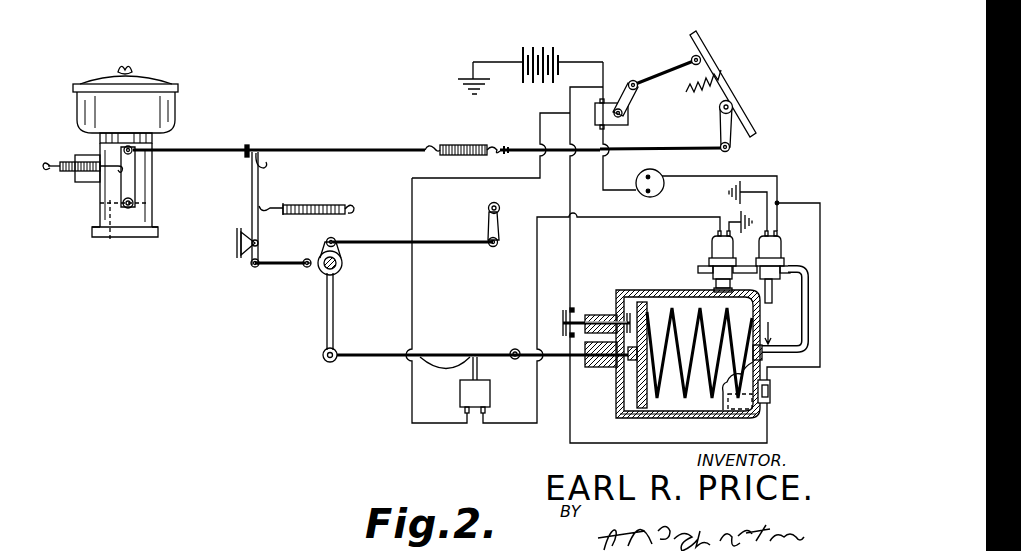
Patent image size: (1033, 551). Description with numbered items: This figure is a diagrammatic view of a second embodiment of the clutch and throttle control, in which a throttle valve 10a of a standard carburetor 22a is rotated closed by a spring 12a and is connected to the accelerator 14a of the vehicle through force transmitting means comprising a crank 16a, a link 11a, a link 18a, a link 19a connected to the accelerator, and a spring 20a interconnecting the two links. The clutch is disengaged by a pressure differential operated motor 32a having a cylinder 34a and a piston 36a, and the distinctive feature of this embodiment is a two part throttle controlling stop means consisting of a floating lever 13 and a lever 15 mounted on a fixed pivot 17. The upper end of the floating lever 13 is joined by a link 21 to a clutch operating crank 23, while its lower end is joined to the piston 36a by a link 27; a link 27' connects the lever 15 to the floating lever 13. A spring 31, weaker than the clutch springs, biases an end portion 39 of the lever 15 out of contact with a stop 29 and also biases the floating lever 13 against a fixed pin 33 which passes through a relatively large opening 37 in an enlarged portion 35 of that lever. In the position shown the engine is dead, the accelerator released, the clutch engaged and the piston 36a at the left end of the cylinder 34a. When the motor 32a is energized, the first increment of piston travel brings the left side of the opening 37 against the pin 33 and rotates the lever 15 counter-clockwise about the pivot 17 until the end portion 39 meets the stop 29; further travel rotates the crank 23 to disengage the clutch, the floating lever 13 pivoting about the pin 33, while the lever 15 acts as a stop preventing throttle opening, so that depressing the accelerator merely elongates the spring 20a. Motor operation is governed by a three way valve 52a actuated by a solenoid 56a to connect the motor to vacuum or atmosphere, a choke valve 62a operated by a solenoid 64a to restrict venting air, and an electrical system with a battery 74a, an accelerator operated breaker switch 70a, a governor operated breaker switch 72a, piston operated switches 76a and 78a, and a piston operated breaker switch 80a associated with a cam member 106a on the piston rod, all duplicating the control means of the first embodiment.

The throttle valve 10a is at (107, 240).
The link 11a is at (195, 150).
The spring 12a is at (70, 170).
The floating lever 13 is at (338, 305).
The accelerator 14a is at (720, 68).
The lever 15 is at (249, 198).
The crank 16a is at (134, 183).
The fixed pivot 17 is at (242, 253).
The link 18a is at (315, 152).
The link 19a is at (638, 148).
The spring 20a is at (461, 143).
The link 21 is at (363, 237).
The carburetor 22a is at (167, 142).
The clutch operating crank 23 is at (488, 223).
The link 27 is at (482, 374).
The link 27' is at (276, 287).
The stop 29 is at (255, 147).
The spring 31 is at (313, 207).
The pressure differential operated motor 32a is at (618, 288).
The fixed pin 33 is at (343, 265).
The cylinder 34a is at (707, 412).
The enlarged portion 35 is at (330, 273).
The piston 36a is at (636, 289).
The opening 37 is at (325, 260).
The end portion 39 is at (262, 156).
The three way valve 52a is at (813, 246).
The solenoid 56a is at (782, 233).
The choke valve 62a is at (712, 262).
The solenoid 64a is at (713, 242).
The accelerator operated breaker switch 70a is at (607, 103).
The governor operated breaker switch 72a is at (664, 188).
The battery 74a is at (538, 44).
The piston operated switch 76a is at (565, 305).
The switch 78a is at (771, 392).
The piston operated breaker switch 80a is at (490, 394).
The cam member 106a is at (447, 367).